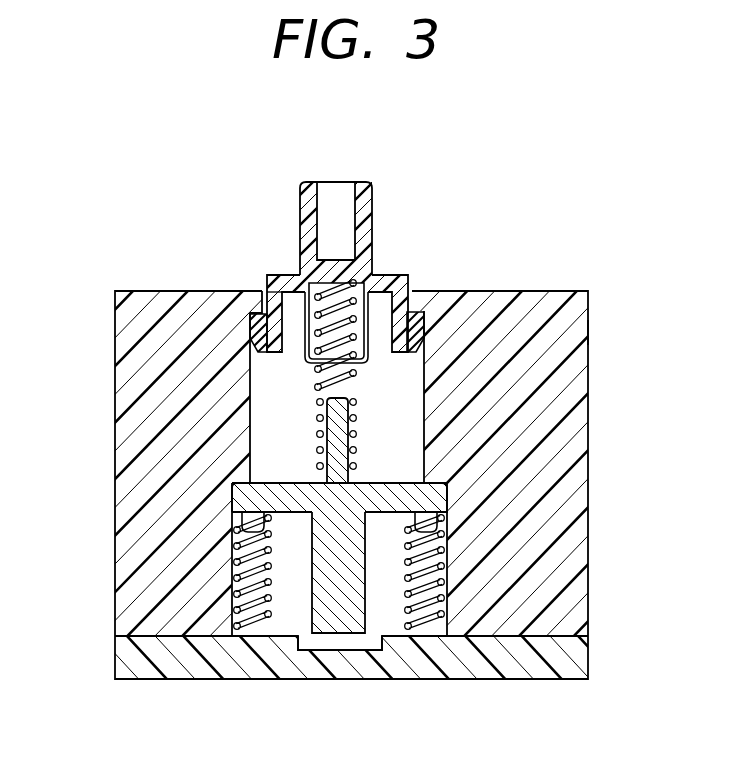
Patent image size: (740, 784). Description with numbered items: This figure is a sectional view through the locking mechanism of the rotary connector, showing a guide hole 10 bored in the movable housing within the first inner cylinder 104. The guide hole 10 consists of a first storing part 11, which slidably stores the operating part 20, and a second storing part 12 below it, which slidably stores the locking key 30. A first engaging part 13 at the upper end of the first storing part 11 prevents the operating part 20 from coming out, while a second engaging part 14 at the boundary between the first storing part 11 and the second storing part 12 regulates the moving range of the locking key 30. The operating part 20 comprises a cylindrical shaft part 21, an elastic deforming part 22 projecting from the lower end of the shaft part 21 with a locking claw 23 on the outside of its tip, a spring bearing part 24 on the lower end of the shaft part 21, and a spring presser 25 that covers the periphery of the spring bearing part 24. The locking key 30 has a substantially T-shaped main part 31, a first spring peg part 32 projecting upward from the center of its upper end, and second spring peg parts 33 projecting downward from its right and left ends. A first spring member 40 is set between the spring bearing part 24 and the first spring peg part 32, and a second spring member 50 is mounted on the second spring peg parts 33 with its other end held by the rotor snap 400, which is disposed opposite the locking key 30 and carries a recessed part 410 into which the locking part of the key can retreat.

The guide hole 10 is at (414, 290).
The first inner cylinder 104 is at (588, 331).
The first storing part 11 is at (412, 435).
The second storing part 12 is at (445, 560).
The first engaging part 13 is at (267, 335).
The second engaging part 14 is at (433, 478).
The operating part 20 is at (370, 392).
The shaft part 21 is at (372, 222).
The elastic deforming part 22 is at (280, 276).
The locking claw 23 is at (255, 341).
The spring bearing part 24 is at (335, 283).
The spring presser 25 is at (263, 297).
The locking key 30 is at (370, 392).
The main part 31 is at (366, 577).
The first spring peg part 32 is at (350, 410).
The second spring peg parts 33 is at (247, 526).
The first spring member 40 is at (320, 382).
The second spring member 50 is at (240, 585).
The rotor snap 400 is at (518, 672).
The recessed part 410 is at (333, 650).